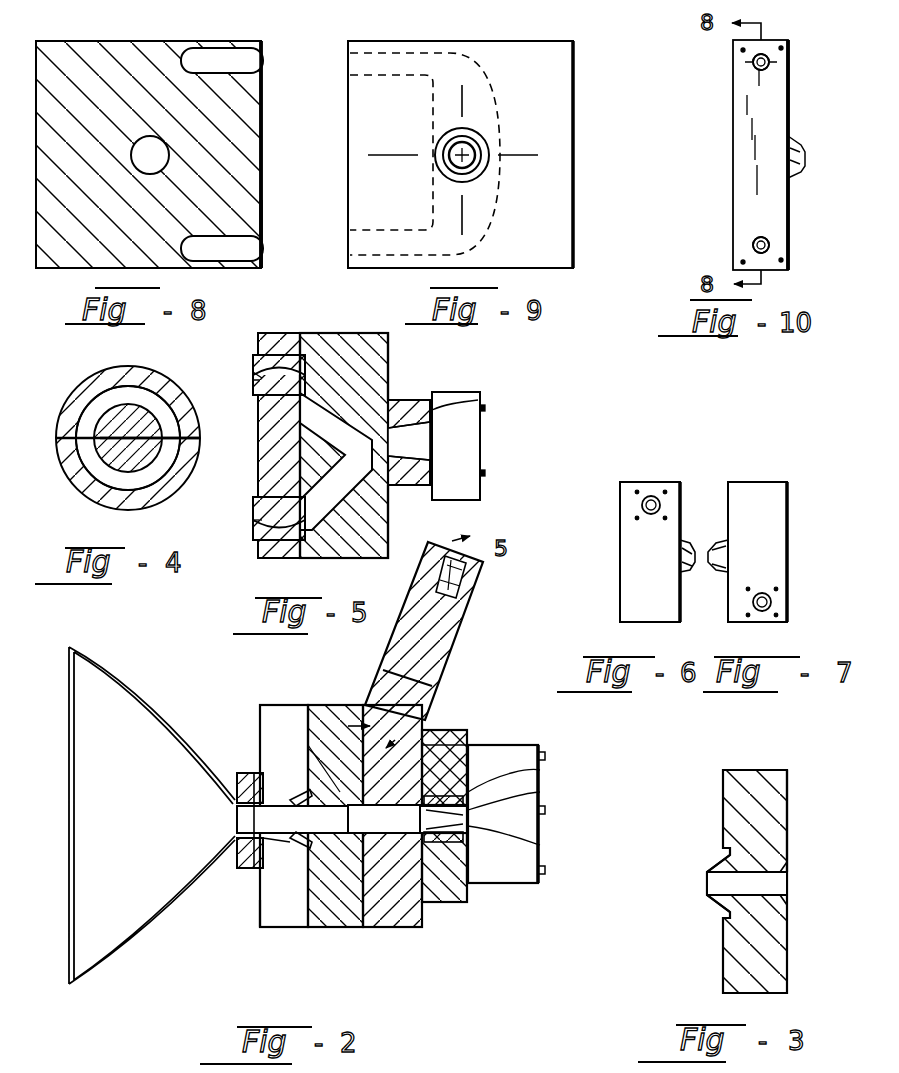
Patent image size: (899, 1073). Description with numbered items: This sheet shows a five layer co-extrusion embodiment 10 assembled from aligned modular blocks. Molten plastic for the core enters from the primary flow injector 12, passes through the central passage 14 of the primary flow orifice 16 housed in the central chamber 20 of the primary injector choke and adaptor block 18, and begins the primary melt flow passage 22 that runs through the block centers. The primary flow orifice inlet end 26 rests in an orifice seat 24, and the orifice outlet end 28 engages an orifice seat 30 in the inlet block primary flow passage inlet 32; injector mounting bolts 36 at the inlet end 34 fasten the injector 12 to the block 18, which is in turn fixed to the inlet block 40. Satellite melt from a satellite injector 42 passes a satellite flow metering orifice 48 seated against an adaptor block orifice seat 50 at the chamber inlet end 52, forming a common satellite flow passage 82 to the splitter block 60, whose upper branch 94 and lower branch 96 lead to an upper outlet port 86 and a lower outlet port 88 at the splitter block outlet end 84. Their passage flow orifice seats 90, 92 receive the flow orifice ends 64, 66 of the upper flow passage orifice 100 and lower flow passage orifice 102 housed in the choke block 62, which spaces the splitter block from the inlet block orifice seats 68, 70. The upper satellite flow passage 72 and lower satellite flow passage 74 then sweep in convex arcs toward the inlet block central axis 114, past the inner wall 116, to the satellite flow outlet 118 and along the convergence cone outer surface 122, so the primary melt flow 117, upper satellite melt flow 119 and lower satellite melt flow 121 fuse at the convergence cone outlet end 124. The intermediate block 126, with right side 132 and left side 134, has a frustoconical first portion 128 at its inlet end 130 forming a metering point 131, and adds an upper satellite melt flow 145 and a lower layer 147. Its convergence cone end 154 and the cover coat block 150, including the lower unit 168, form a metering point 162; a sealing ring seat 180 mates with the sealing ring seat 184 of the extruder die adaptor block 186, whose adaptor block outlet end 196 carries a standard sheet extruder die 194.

In FIG. 2, the five layer extrusion embodiment 10 is at (344, 780).
In FIG. 2, the primary flow injector 12 is at (547, 890).
In FIG. 2, the central passage 14 is at (540, 816).
In FIG. 2, the primary flow orifice 16 is at (490, 885).
In FIG. 2, the primary injector choke and adaptor block 18 is at (469, 902).
In FIG. 2, the central chamber 20 is at (463, 904).
In FIG. 2, the primary melt flow passage 22 is at (293, 929).
In FIG. 2, the orifice seat 24 is at (540, 770).
In FIG. 2, the primary flow orifice inlet end 26 is at (540, 845).
In FIG. 2, the orifice outlet end 28 is at (540, 792).
In FIG. 2, the orifice seat 30 is at (540, 745).
In FIG. 2, the inlet block primary flow passage inlet 32 is at (392, 836).
In FIG. 2, the primary injector choke and adaptor block inlet end 34 is at (490, 886).
In FIG. 2, the injector mounting bolts 36 is at (548, 872).
In FIG. 8, the inlet block 40 is at (292, 254).
In FIG. 9, the inlet block 40 is at (580, 263).
In FIG. 10, the inlet block 40 is at (738, 191).
In FIG. 2, the inlet block 40 is at (419, 938).
In FIG. 5, the satellite injectors 42 is at (463, 392).
In FIG. 5, the satellite flow metering orifice 48 is at (402, 414).
In FIG. 2, the satellite flow metering orifice 48 is at (473, 585).
In FIG. 5, the adaptor block orifice seat 50 is at (446, 430).
In FIG. 5, the chamber inlet end 52 is at (437, 418).
In FIG. 5, the splitter block 60 is at (348, 562).
In FIG. 2, the splitter block 60 is at (445, 631).
In FIG. 5, the choke block 62 is at (275, 350).
In FIG. 2, the choke block 62 is at (440, 708).
In FIG. 5, the flow orifice end 64 is at (262, 434).
In FIG. 5, the flow orifice end 66 is at (265, 553).
In FIG. 10, the orifice seat 68 is at (758, 72).
In FIG. 10, the orifice seat 70 is at (753, 243).
In FIG. 8, the upper satellite flow passage 72 is at (195, 58).
In FIG. 9, the upper satellite flow passage 72 is at (392, 58).
In FIG. 10, the upper satellite flow passage 72 is at (753, 62).
In FIG. 10, the lower satellite flow passage 74 is at (754, 250).
In FIG. 5, the common satellite flow passage 82 is at (486, 476).
In FIG. 5, the splitter block outlet end 84 is at (264, 346).
In FIG. 5, the upper outlet port 86 is at (306, 352).
In FIG. 5, the lower outlet port 88 is at (300, 560).
In FIG. 5, the passage flow orifice seat 90 is at (345, 402).
In FIG. 5, the passage flow orifice seat 92 is at (384, 546).
In FIG. 5, the upper branch 94 is at (390, 342).
In FIG. 5, the lower branch 96 is at (362, 476).
In FIG. 5, the upper flow passage orifice 100 is at (256, 396).
In FIG. 5, the lower flow passage orifice 102 is at (254, 509).
In FIG. 9, the inlet block central axis 114 is at (456, 152).
In FIG. 9, the inner wall 116 is at (448, 178).
In FIG. 2, the inner wall 116 is at (447, 766).
In FIG. 4, the primary melt flow 117 is at (82, 396).
In FIG. 9, the inlet block satellite flow outlet 118 is at (442, 165).
In FIG. 4, the upper passage satellite melt flow 119 is at (100, 382).
In FIG. 4, the inlet block lower satellite melt flow 121 is at (74, 468).
In FIG. 2, the convergence cone outer surface 122 is at (338, 788).
In FIG. 9, the convergence cone outlet end 124 is at (486, 152).
In FIG. 6, the intermediate block 126 is at (642, 529).
In FIG. 7, the intermediate block 126 is at (778, 535).
In FIG. 3, the intermediate block 126 is at (771, 768).
In FIG. 2, the intermediate block 126 is at (410, 731).
In FIG. 3, the first portion 128 is at (787, 880).
In FIG. 3, the inlet end 130 is at (787, 842).
In FIG. 2, the metering point 131 is at (340, 792).
In FIG. 8, the right side 132 is at (262, 96).
In FIG. 10, the right side 132 is at (752, 157).
In FIG. 6, the right side 132 is at (638, 576).
In FIG. 2, the right side 132 is at (318, 714).
In FIG. 7, the left side 134 is at (778, 552).
In FIG. 2, the left side 134 is at (346, 930).
In FIG. 4, the intermediate block upper satellite melt flow 145 is at (148, 376).
In FIG. 4, the layer 147 is at (164, 486).
In FIG. 2, the cover coat block 150 is at (262, 936).
In FIG. 6, the intermediate block convergence cone end 154 is at (695, 566).
In FIG. 3, the intermediate block convergence cone end 154 is at (707, 897).
In FIG. 2, the intermediate block convergence cone end 154 is at (294, 800).
In FIG. 2, the metering point 162 is at (274, 858).
In FIG. 2, the lower unit 168 is at (262, 714).
In FIG. 2, the sealing ring seat 180 is at (240, 864).
In FIG. 2, the sealing ring seat 184 is at (240, 815).
In FIG. 2, the extruder die adaptor block 186 is at (246, 768).
In FIG. 2, the sheet extruder die 194 is at (121, 675).
In FIG. 2, the adaptor block outlet end 196 is at (244, 770).